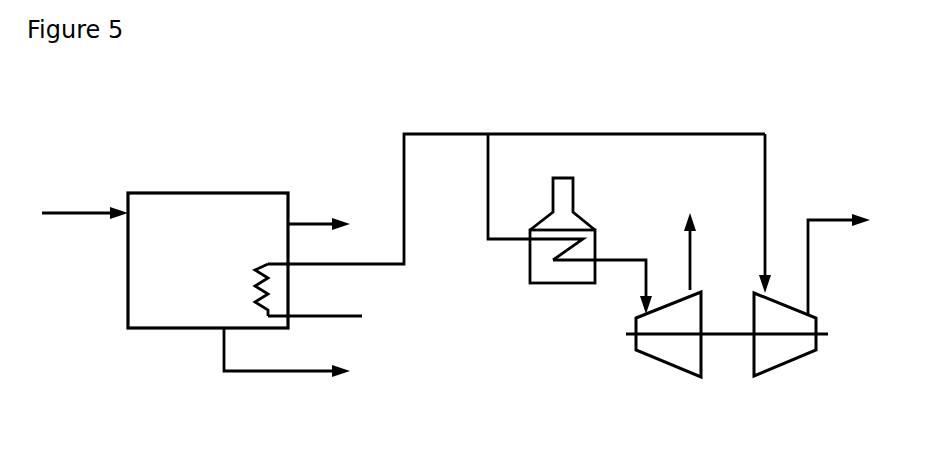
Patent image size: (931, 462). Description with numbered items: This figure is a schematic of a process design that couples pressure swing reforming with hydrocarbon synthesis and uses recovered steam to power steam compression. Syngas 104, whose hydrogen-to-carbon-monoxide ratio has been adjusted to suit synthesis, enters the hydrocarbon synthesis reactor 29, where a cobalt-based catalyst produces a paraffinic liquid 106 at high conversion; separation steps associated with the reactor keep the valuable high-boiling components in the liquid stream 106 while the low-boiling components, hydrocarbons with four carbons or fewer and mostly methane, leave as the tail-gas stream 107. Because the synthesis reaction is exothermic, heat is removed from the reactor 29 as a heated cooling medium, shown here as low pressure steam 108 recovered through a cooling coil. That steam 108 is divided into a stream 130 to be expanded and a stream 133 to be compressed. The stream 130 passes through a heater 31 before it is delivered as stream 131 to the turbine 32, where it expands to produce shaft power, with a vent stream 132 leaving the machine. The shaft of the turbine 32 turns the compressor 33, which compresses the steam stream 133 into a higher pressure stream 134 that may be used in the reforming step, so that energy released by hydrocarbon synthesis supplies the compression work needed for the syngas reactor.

The hydrocarbon synthesis reactor 29 is at (170, 330).
The remaining syngas 104 is at (60, 213).
The tail-gas stream 107 is at (322, 222).
The paraffinic liquid 106 is at (282, 372).
The low pressure steam 108 is at (355, 265).
The stream to be expanded 130 is at (490, 175).
The heater / heat exchanger 31 is at (548, 284).
The heated stream to compressor 131 is at (625, 262).
The compressor vent stream 132 is at (688, 258).
The turbine 32 is at (657, 357).
The stream to be compressed 133 is at (767, 182).
The compressor 33 is at (790, 358).
The higher pressure stream 134 is at (820, 218).